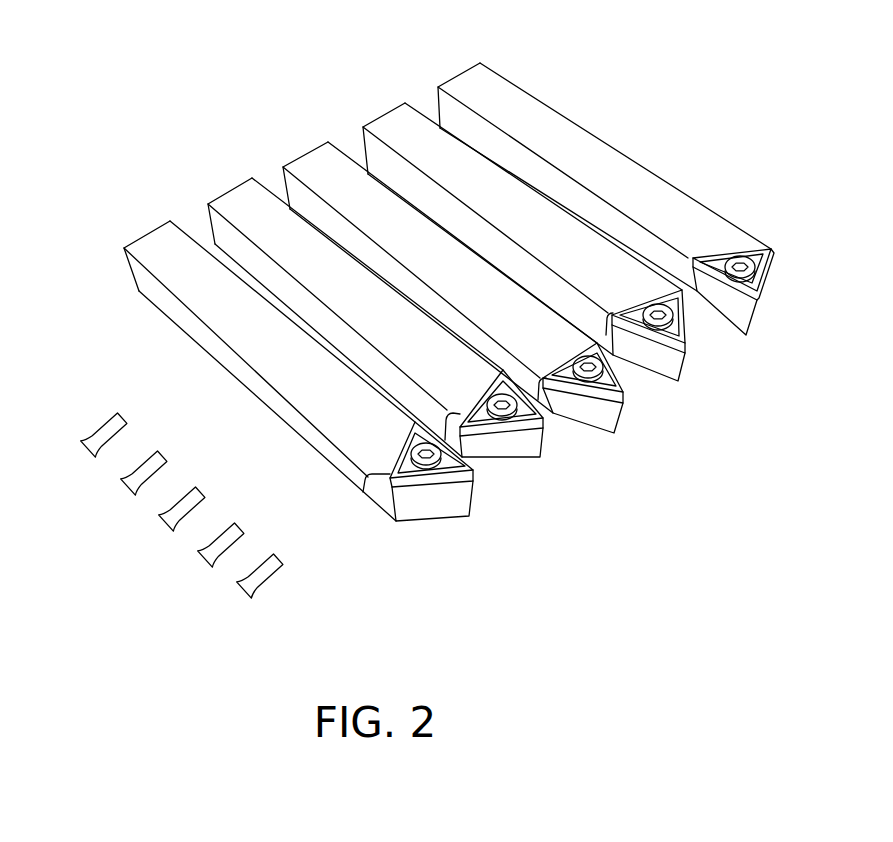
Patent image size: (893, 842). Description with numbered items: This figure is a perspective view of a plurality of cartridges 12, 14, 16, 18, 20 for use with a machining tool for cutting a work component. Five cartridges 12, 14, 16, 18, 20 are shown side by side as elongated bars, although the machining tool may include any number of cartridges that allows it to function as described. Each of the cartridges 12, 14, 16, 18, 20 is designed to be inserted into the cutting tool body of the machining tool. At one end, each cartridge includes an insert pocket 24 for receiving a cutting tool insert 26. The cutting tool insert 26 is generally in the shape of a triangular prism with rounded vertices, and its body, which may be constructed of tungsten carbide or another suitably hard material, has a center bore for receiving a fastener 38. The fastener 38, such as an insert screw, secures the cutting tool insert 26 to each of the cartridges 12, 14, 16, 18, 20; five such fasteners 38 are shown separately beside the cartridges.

The cartridge 12 is at (152, 242).
The cartridge 14 is at (237, 203).
The cartridge 16 is at (310, 163).
The cartridge 18 is at (390, 123).
The cartridge 20 is at (470, 77).
The insert pocket 24 is at (363, 488).
The cutting tool insert 26 is at (448, 472).
The fastener 38 is at (83, 449).